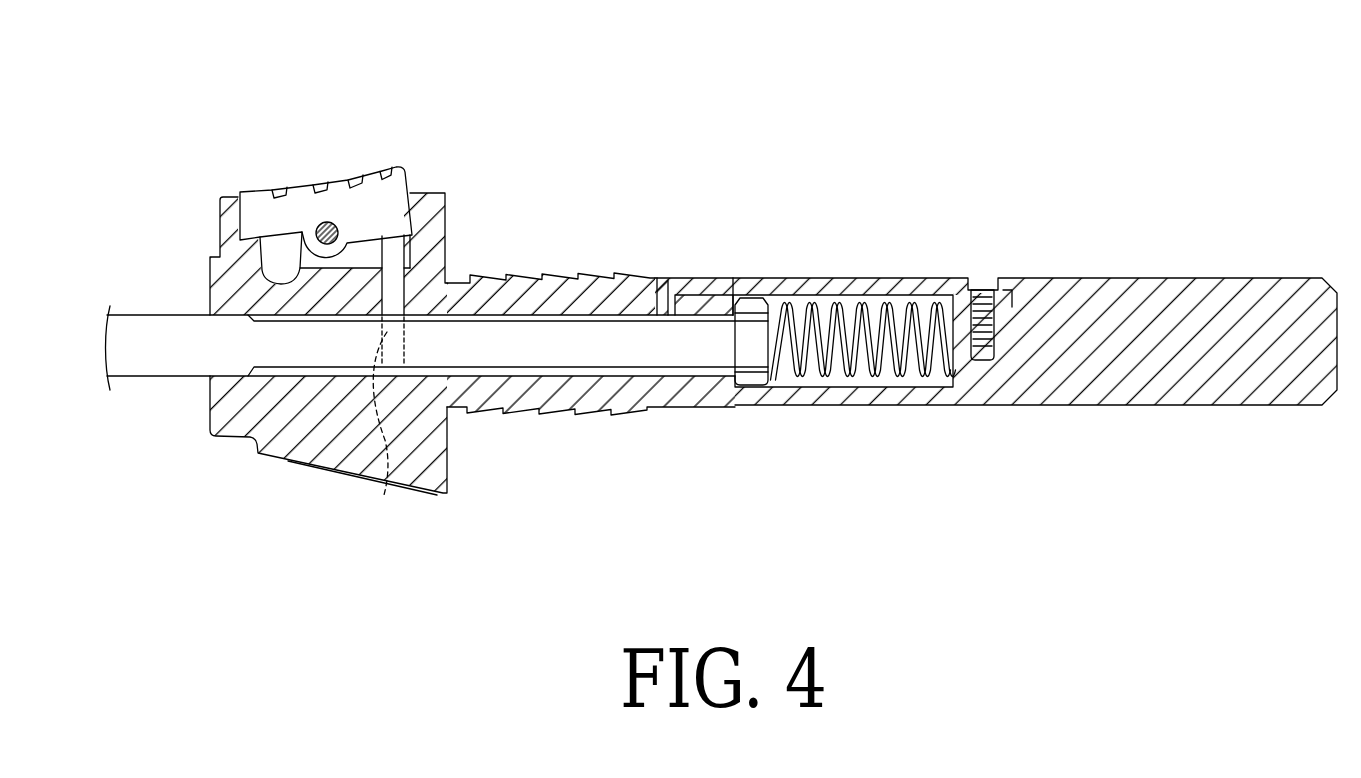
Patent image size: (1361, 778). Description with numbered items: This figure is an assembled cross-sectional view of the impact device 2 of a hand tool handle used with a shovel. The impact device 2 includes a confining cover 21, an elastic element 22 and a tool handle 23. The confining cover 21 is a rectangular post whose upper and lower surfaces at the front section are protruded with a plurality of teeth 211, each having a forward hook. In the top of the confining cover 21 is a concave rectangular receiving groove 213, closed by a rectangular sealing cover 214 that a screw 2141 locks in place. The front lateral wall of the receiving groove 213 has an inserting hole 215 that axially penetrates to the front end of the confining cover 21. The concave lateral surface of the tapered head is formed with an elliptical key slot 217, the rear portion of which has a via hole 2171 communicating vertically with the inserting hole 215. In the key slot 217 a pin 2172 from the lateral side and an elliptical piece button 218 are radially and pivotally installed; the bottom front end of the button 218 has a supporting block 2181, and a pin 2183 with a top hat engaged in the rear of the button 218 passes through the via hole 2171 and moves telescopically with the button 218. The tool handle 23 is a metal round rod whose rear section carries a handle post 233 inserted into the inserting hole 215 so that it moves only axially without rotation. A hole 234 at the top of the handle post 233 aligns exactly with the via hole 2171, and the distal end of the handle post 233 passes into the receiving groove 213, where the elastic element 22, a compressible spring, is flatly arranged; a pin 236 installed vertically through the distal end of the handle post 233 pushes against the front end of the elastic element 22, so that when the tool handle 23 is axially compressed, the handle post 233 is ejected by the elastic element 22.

The impact device 2 is at (774, 178).
The confining cover 21 is at (1147, 287).
The teeth 211 is at (560, 278).
The receiving groove 213 is at (827, 298).
The sealing cover 214 is at (705, 295).
The screw 2141 is at (990, 292).
The inserting hole 215 is at (655, 367).
The key slot 217 is at (238, 242).
The via hole 2171 is at (410, 297).
The pin 2172 is at (328, 222).
The button 218 is at (259, 196).
The supporting block 2181 is at (283, 272).
The pin 2183 is at (397, 260).
The elastic element 22 is at (917, 282).
The tool handle 23 is at (172, 376).
The handle post 233 is at (300, 357).
The hole 234 is at (368, 434).
The pin 236 is at (753, 375).